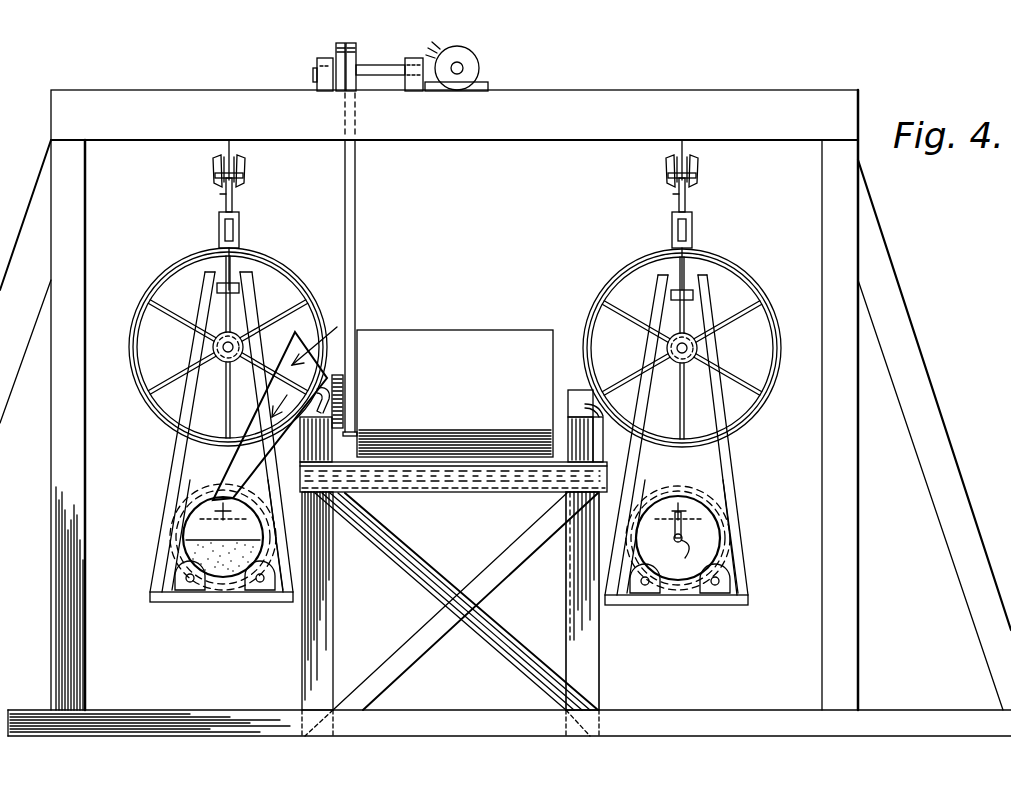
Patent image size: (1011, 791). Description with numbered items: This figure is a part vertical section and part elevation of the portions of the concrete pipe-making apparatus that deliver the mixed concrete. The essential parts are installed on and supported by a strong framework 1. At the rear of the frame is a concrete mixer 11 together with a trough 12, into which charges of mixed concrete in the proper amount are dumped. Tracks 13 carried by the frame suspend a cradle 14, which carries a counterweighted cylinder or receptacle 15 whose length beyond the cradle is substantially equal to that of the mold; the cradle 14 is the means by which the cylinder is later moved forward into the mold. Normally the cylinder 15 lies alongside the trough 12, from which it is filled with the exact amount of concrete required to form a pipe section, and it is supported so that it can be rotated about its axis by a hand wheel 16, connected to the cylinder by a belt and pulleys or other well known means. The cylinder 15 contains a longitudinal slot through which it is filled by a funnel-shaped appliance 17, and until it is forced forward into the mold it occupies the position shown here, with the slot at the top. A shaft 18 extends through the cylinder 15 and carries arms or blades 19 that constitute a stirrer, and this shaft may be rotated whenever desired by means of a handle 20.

The framework 1 is at (808, 92).
The concrete mixer 11 is at (451, 396).
The trough 12 is at (453, 599).
The tracks 13 is at (232, 152).
The cradle 14 is at (152, 603).
The counterweighted cylinder or receptacle 15 is at (223, 580).
The hand wheel 16 is at (277, 271).
The funnel-shaped appliance 17 is at (240, 465).
The shaft 18 is at (223, 512).
The arms or blades 19 is at (233, 512).
The handle 20 is at (673, 539).